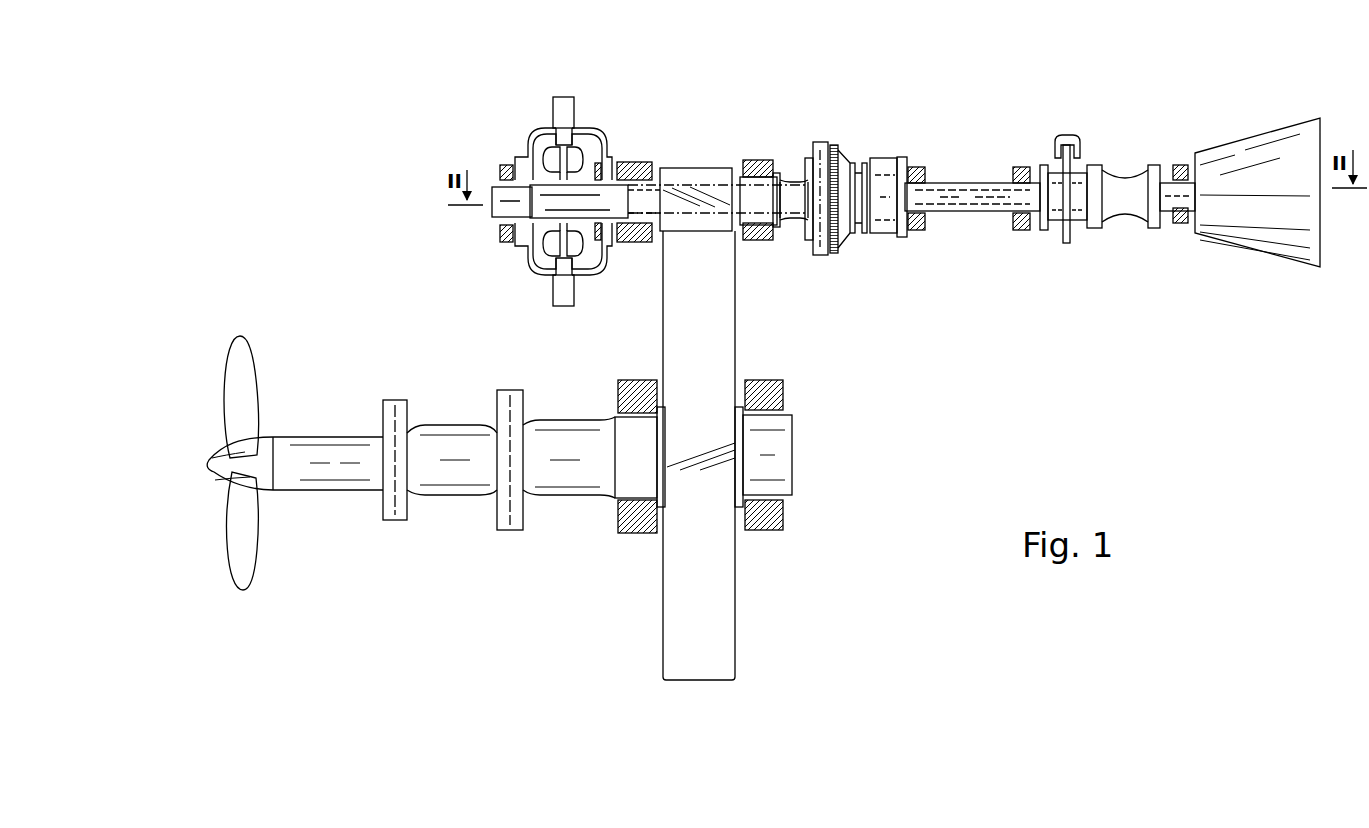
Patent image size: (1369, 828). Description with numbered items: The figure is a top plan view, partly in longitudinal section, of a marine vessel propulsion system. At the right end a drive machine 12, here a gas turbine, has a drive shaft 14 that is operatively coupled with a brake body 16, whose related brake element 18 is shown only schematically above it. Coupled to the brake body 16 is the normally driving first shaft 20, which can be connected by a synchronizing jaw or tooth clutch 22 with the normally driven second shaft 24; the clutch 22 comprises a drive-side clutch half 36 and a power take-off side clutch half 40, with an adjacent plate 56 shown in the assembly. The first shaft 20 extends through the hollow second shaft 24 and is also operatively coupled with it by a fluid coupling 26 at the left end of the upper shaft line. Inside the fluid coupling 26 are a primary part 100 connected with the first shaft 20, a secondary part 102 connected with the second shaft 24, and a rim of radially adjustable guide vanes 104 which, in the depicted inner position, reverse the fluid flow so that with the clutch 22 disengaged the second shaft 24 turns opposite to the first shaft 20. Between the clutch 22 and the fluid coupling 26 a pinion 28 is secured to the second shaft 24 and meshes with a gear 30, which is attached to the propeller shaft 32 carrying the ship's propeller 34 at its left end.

The drive machine 12 is at (1278, 245).
The drive shaft 14 is at (1178, 190).
The brake body 16 is at (1075, 212).
The brake element 18 is at (1068, 132).
The first shaft 20 is at (500, 212).
The synchronizing jaw or tooth clutch 22 is at (865, 247).
The second shaft 24 is at (790, 178).
The fluid coupling 26 is at (490, 139).
The pinion 28 is at (697, 172).
The gear 30 is at (713, 325).
The propeller shaft 32 is at (574, 475).
The ship's propeller 34 is at (265, 473).
The drive-side clutch half 36 is at (880, 170).
The power take-off side clutch half 40 is at (818, 148).
The plate 56 is at (853, 180).
The primary coupling part 100 is at (545, 262).
The secondary part 102 is at (587, 260).
The guide vanes 104 is at (566, 270).